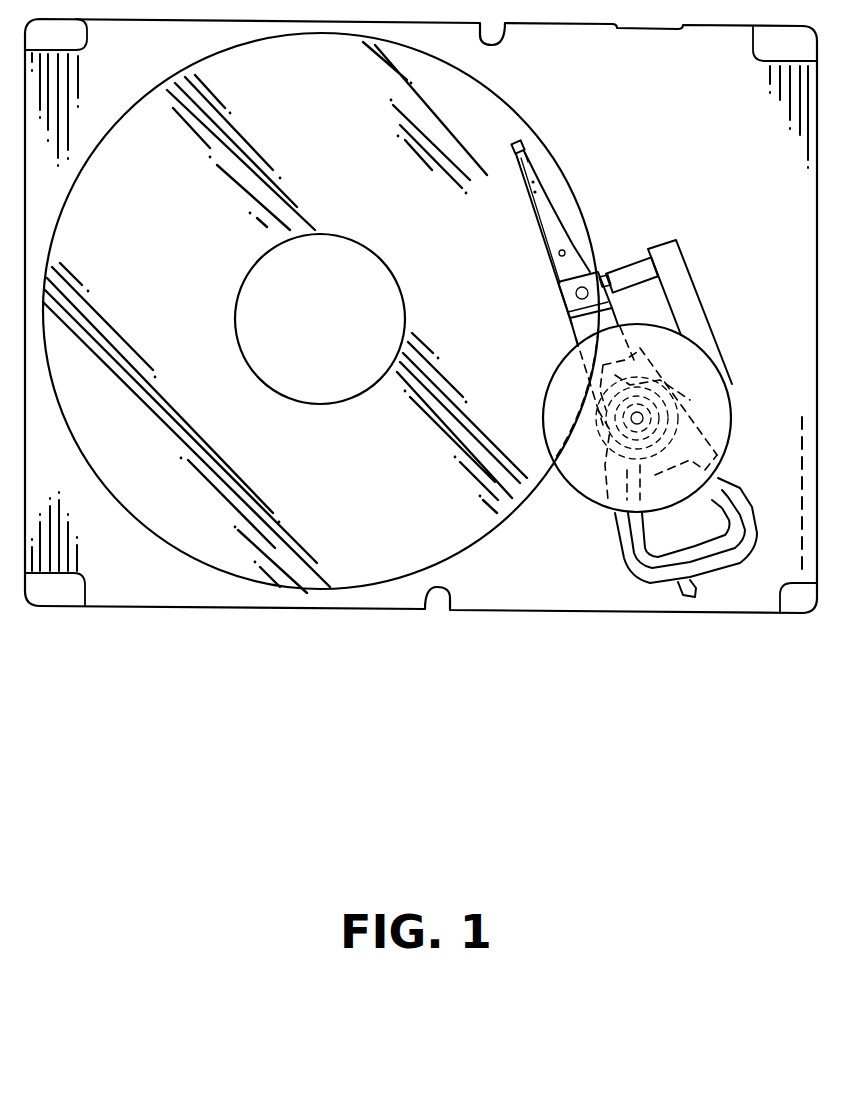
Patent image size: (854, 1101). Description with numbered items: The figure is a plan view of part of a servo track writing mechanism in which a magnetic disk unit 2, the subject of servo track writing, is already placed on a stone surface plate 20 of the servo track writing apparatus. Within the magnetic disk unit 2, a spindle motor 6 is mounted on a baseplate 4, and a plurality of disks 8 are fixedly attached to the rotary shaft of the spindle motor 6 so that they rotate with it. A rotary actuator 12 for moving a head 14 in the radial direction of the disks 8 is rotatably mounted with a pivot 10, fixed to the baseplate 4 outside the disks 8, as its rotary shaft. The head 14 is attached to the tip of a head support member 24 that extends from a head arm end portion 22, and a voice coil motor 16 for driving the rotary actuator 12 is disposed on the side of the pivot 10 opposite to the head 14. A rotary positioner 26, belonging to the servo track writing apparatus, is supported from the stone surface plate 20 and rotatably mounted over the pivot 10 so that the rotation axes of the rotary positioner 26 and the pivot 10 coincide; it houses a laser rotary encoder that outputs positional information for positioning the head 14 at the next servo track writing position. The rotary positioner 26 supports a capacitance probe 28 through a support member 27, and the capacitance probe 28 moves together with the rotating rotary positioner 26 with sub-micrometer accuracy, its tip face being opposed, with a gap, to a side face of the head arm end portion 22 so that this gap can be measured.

The magnetic disk unit 2 is at (412, 361).
The baseplate 4 is at (258, 609).
The spindle motor 6 is at (268, 277).
The disks 8 is at (203, 537).
The pivot 10 is at (608, 437).
The rotary actuator 12 is at (614, 357).
The head 14 is at (524, 143).
The voice coil motor 16 is at (663, 538).
The stone surface plate 20 is at (502, 706).
The head arm end portion 22 is at (562, 302).
The head support member 24 is at (545, 238).
The rotary positioner 26 is at (654, 438).
The support member 27 is at (687, 318).
The capacitance probe 28 is at (623, 268).